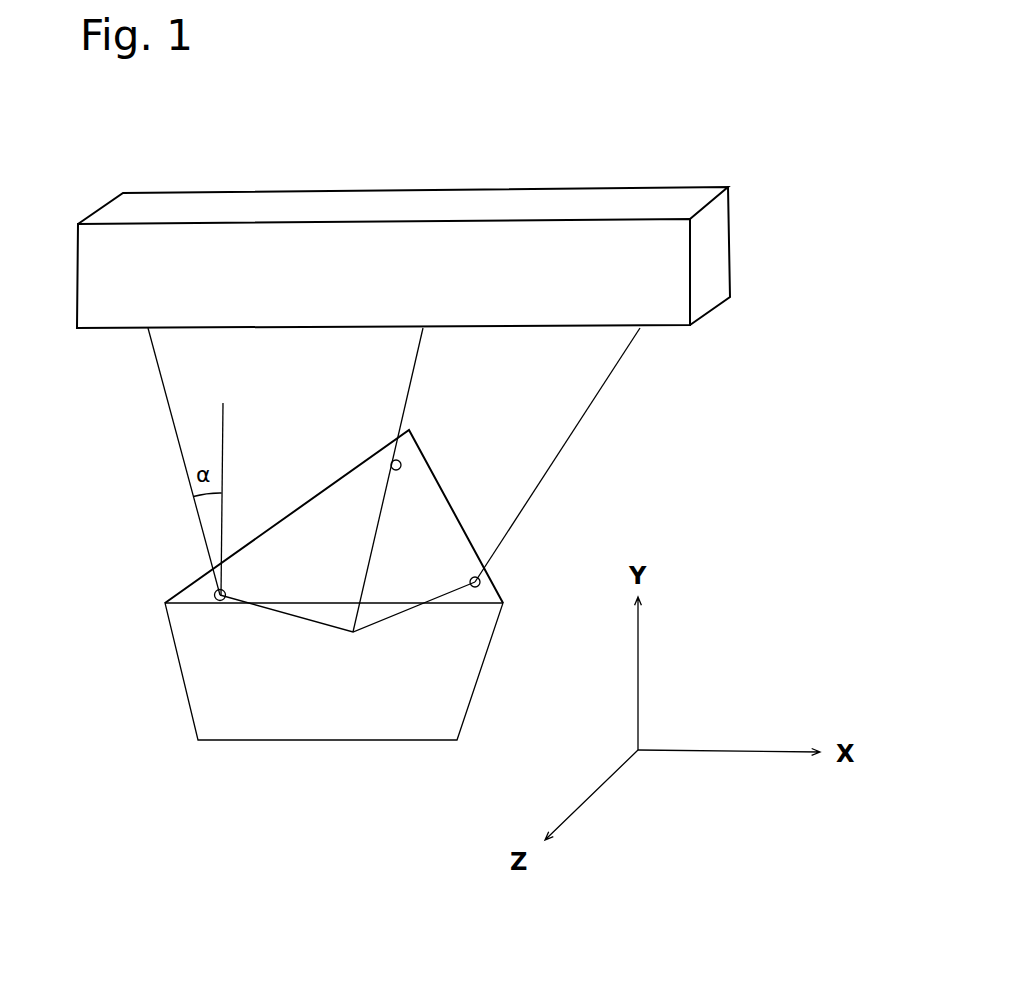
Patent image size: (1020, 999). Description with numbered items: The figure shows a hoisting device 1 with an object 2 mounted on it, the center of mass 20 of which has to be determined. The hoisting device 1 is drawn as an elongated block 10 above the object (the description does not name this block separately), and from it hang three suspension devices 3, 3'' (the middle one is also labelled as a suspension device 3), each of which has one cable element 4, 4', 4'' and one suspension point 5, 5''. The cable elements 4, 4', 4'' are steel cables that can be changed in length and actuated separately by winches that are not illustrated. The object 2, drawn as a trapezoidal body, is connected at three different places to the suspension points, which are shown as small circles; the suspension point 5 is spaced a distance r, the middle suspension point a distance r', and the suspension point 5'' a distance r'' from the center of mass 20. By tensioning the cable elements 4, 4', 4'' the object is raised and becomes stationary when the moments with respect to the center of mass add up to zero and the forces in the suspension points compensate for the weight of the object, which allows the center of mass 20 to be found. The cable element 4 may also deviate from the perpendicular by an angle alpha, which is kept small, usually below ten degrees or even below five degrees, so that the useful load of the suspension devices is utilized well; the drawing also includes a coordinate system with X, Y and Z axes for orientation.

The hoisting device 1 is at (430, 169).
The housing / sensor unit 10 is at (652, 205).
The object 2 is at (204, 724).
The suspension device 3 is at (257, 480).
The suspension device 3'' is at (558, 455).
The cable element 4 is at (197, 461).
The cable element 4' is at (414, 480).
The cable element 4'' is at (558, 455).
The suspension point 5 is at (251, 512).
The suspension point 5'' is at (523, 592).
The center of mass 20 is at (356, 648).